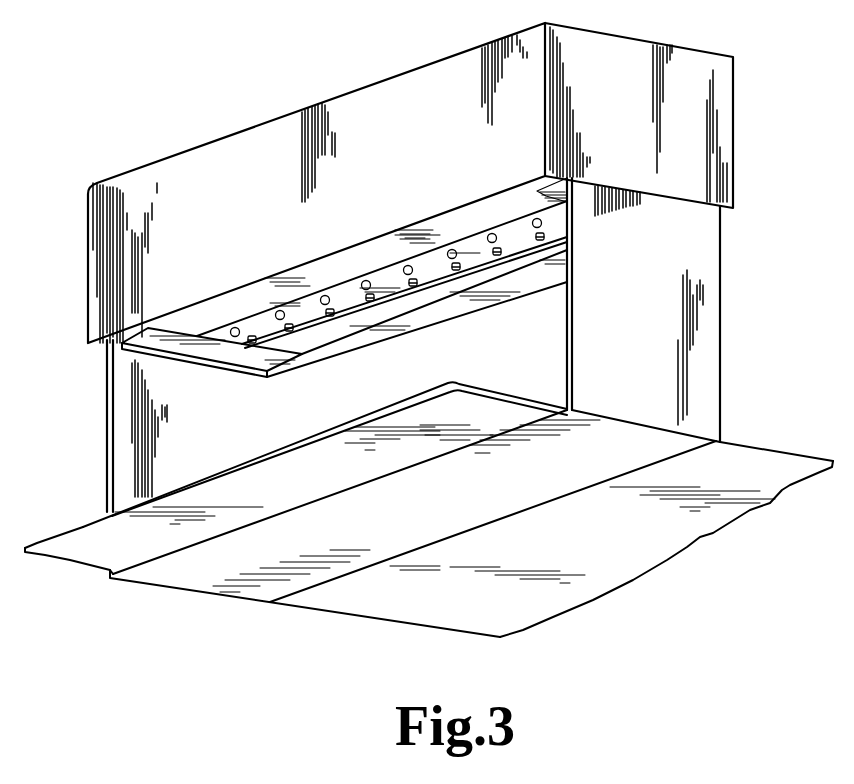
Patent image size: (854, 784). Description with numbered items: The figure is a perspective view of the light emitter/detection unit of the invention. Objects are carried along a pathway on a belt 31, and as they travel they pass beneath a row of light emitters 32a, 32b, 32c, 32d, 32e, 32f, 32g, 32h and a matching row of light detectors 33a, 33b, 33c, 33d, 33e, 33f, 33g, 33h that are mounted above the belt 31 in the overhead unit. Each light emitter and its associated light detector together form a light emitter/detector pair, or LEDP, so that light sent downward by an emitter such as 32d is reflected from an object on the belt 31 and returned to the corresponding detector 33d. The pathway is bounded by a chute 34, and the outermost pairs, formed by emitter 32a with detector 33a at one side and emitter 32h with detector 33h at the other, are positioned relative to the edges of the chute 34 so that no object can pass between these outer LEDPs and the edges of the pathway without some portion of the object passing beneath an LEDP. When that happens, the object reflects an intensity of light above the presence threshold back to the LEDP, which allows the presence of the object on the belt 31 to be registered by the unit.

The belt 31 is at (420, 458).
The light emitter 32a is at (234, 328).
The light emitter 32b is at (280, 311).
The light emitter 32c is at (325, 296).
The light emitter 32d is at (366, 281).
The light emitter 32e is at (408, 266).
The light emitter 32f is at (452, 249).
The light emitter 32g is at (492, 234).
The light emitter 32h is at (537, 218).
The light detector 33a is at (252, 345).
The light detector 33b is at (291, 332).
The light detector 33c is at (332, 316).
The light detector 33d is at (373, 301).
The light detector 33e is at (417, 287).
The light detector 33f is at (461, 270).
The light detector 33g is at (500, 256).
The light detector 33h is at (545, 240).
The chute 34 is at (702, 356).